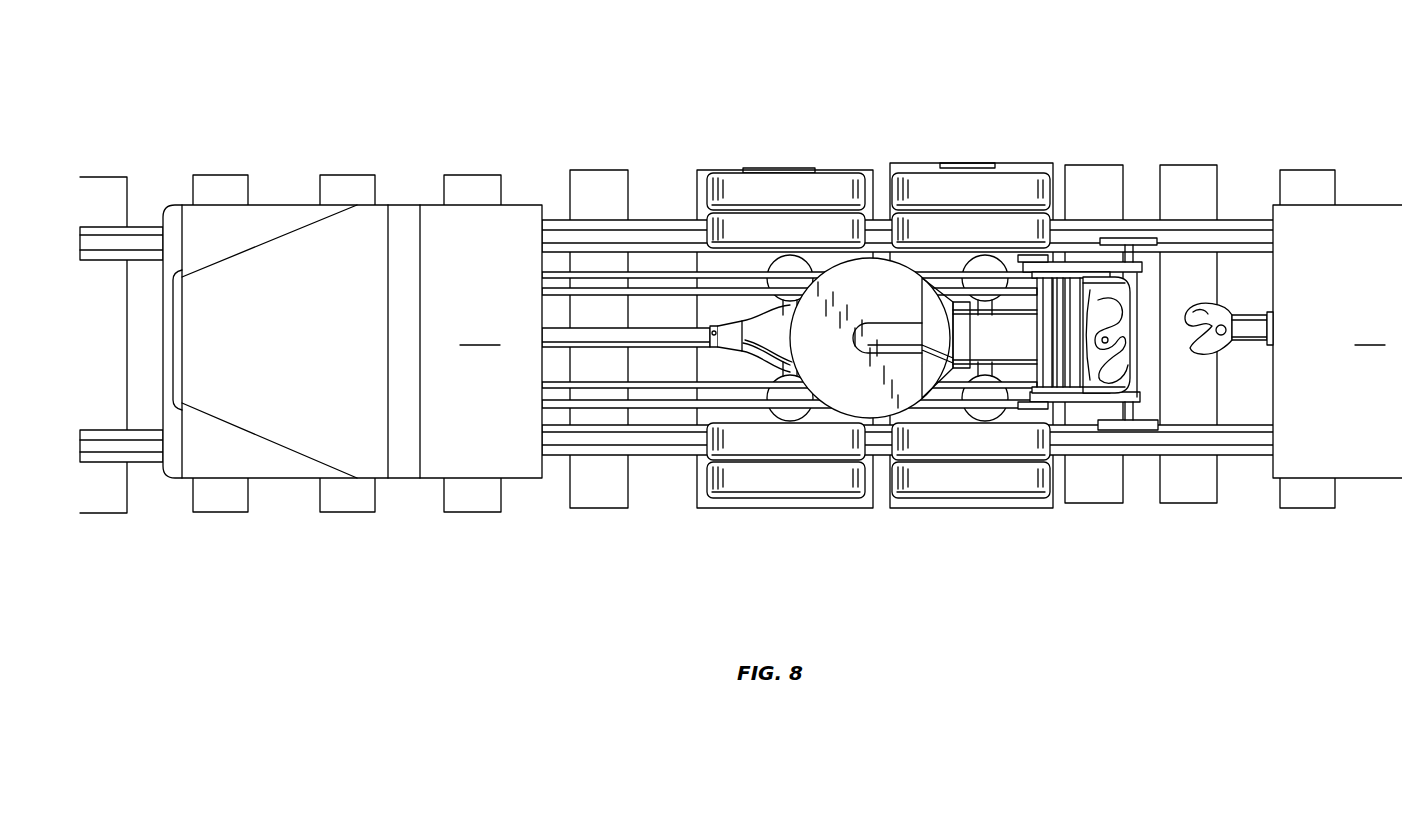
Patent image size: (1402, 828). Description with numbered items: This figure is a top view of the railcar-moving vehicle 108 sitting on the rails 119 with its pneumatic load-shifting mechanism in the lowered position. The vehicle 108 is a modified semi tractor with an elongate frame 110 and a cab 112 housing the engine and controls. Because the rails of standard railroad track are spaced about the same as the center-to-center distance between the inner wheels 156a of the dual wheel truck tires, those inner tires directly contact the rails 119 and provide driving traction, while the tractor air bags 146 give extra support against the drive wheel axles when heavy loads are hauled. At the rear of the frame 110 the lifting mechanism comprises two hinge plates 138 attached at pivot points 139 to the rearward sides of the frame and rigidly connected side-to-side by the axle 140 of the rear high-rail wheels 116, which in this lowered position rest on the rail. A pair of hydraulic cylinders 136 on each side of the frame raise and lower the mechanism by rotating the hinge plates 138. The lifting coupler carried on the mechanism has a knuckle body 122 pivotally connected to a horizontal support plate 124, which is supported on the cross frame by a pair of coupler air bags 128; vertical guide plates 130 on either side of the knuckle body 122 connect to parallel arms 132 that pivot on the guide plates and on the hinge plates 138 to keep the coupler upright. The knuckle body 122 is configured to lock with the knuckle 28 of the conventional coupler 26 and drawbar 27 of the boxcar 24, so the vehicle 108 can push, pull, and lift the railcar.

The railcar-moving vehicle 108 is at (480, 130).
The frame 110 is at (660, 290).
The cab 112 is at (352, 341).
The high-rail wheels 116 is at (1135, 245).
The rails 119 is at (585, 238).
The knuckle body 122 is at (1128, 320).
The horizontal support plate 124 is at (1125, 283).
The coupler air bags 128 is at (1135, 395).
The vertical guide plates 130 is at (1105, 290).
The parallel arms 132 is at (1082, 280).
The hydraulic cylinders 136 is at (922, 258).
The hinge plates 138 is at (1068, 272).
The pivot points 139 is at (1058, 262).
The axle 140 is at (1140, 268).
The tractor air bags 146 is at (785, 252).
The inner wheels 156a is at (790, 215).
The boxcar 24 is at (1337, 341).
The coupler 26 is at (1218, 347).
The drawbar 27 is at (1265, 320).
The knuckle 28 is at (1262, 310).